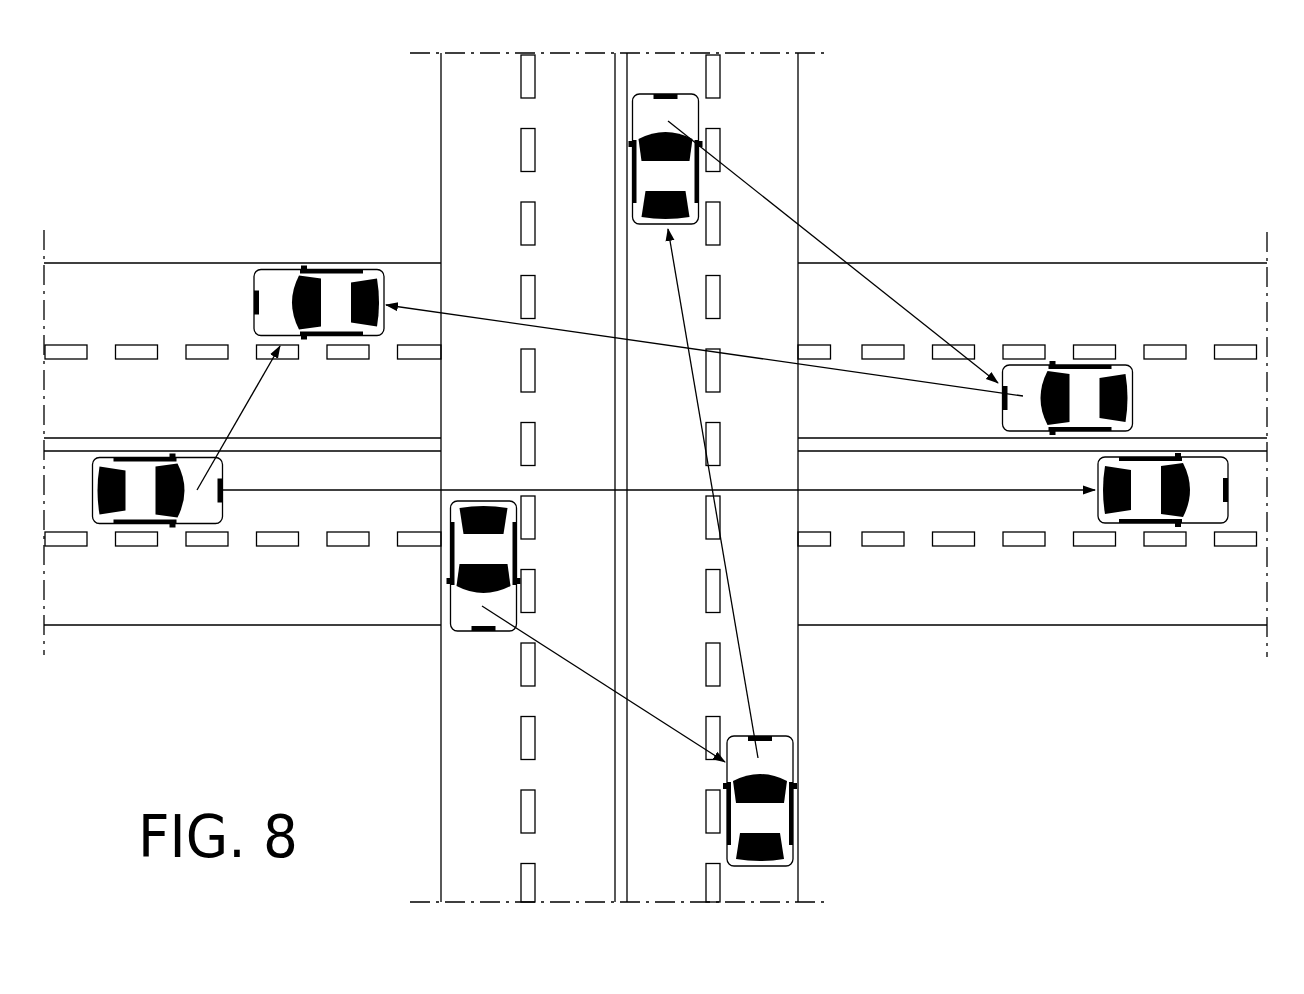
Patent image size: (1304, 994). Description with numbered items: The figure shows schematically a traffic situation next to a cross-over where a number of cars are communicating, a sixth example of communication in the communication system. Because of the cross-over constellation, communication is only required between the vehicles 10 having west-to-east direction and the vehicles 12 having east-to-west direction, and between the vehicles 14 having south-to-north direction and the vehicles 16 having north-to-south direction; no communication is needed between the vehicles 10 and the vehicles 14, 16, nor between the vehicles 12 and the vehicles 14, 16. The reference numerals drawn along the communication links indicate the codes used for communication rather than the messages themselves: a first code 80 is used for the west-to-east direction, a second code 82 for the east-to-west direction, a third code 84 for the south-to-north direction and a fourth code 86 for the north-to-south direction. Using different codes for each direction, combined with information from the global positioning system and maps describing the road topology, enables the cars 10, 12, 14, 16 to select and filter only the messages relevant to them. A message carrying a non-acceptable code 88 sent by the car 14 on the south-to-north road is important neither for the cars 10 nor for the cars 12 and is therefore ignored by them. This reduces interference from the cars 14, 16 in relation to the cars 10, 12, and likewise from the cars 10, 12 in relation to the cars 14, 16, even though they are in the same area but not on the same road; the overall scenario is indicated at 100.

The vehicles having west-to-east direction 10 is at (120, 528).
The vehicles having east-to-west direction 12 is at (283, 268).
The vehicles having south-to-north direction 14 is at (632, 124).
The vehicles having north-to-south direction 16 is at (440, 605).
The first code 80 is at (236, 418).
The second code 82 is at (485, 318).
The third code 84 is at (747, 692).
The fourth code 86 is at (632, 702).
The non-acceptable code 88 is at (835, 262).
The traffic scenario 100 is at (1105, 187).